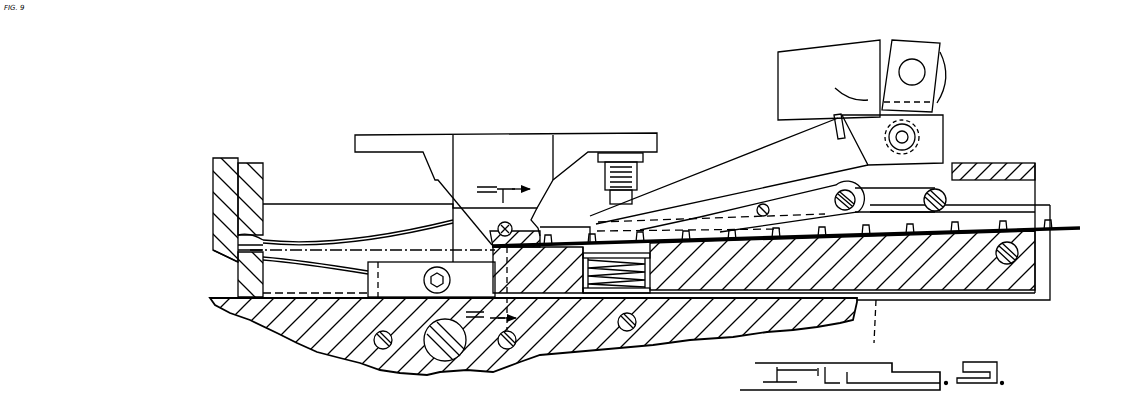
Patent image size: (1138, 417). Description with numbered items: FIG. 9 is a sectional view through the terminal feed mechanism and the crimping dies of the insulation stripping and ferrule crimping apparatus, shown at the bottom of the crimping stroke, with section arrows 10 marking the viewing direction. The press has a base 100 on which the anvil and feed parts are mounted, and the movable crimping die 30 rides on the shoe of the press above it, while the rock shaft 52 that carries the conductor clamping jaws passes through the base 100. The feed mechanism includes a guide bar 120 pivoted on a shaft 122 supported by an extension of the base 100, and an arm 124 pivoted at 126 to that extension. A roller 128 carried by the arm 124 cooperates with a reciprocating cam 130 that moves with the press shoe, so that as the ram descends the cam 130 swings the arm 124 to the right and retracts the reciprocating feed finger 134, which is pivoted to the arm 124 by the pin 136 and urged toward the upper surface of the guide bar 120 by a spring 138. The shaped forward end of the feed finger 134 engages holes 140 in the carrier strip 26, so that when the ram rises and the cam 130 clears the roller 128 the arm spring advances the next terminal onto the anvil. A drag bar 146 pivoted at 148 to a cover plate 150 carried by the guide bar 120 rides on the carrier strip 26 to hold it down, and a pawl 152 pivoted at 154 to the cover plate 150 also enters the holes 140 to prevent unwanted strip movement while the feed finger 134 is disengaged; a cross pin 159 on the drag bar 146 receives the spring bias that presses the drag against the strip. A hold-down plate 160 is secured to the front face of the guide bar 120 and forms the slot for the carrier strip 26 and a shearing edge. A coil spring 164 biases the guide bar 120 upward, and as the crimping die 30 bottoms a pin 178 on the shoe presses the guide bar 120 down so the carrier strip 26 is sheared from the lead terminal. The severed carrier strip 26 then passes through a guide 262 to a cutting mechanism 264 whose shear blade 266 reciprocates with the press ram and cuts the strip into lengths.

The direction arrow 10 is at (519, 243).
The carrier strip 26 is at (366, 248).
The crimping die 30 is at (508, 133).
The rock shaft 52 is at (441, 361).
The base 100 is at (325, 340).
The guide bar 120 is at (923, 300).
The shaft 122 is at (1018, 255).
The arm 124 is at (940, 102).
The pivot 126 is at (872, 345).
The roller 128 is at (947, 63).
The reciprocating cam 130 is at (829, 80).
The feed finger 134 is at (710, 178).
The pin 136 is at (908, 137).
The spring 138 is at (837, 130).
The holes 140 is at (668, 248).
The drag bar 146 is at (777, 207).
The pivot 148 is at (835, 201).
The cover plate 150 is at (980, 188).
The pawl 152 is at (707, 270).
The shaft 154 is at (960, 204).
The cross pin 159 is at (758, 208).
The hold-down plate 160 is at (552, 232).
The coil spring 164 is at (643, 300).
The pin 178 is at (650, 175).
The guide 262 is at (298, 232).
The cutting mechanism 264 is at (220, 264).
The shear blade 266 is at (224, 197).